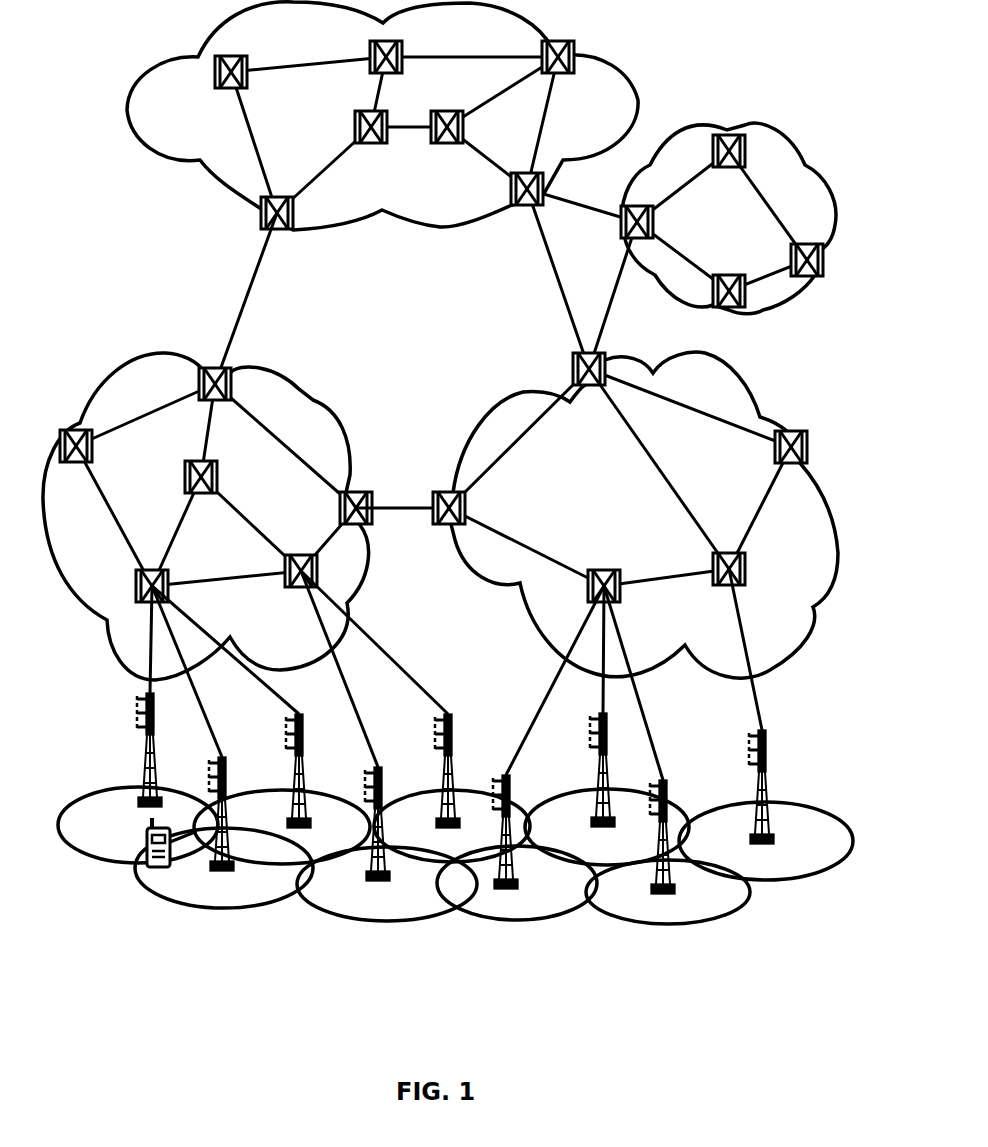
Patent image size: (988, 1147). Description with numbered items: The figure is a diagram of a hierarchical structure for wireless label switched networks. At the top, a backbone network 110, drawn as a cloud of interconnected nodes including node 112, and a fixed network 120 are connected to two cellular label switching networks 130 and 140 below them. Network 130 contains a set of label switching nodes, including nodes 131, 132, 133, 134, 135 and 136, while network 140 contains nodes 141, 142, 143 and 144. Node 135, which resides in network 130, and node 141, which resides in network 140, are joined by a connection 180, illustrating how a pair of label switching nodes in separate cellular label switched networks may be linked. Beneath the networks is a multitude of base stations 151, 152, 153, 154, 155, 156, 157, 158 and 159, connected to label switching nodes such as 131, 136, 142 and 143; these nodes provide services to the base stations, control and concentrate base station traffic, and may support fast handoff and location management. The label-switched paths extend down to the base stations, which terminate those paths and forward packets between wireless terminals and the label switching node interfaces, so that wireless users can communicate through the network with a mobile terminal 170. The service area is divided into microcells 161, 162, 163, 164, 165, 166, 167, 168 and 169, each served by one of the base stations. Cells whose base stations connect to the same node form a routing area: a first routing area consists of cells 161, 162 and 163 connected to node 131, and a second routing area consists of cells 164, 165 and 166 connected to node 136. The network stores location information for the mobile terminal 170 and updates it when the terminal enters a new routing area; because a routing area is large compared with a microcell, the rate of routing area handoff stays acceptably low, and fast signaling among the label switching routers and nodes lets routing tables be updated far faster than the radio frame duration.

The backbone network 110 is at (610, 60).
The core network node 112 is at (262, 218).
The fixed network 120 is at (775, 125).
The label switching network 130 is at (165, 352).
The label switching node 131 is at (137, 602).
The access network node 132 is at (230, 370).
The access network node 133 is at (82, 430).
The access network node 134 is at (217, 475).
The node 135 is at (358, 492).
The label switching node 136 is at (317, 583).
The label switching network 140 is at (735, 370).
The node 141 is at (452, 495).
The label switching node 142 is at (572, 636).
The label switching node 143 is at (745, 585).
The access network node 144 is at (575, 365).
The base station 151 is at (148, 738).
The base station 152 is at (218, 868).
The base station 153 is at (287, 745).
The base station 154 is at (370, 877).
The base station 155 is at (438, 743).
The base station 156 is at (500, 885).
The base station 157 is at (592, 748).
The base station 158 is at (663, 892).
The base station 159 is at (748, 762).
The microcell 161 is at (103, 860).
The microcell 162 is at (213, 910).
The microcell 163 is at (297, 867).
The microcell 164 is at (367, 920).
The microcell 165 is at (480, 790).
The microcell 166 is at (527, 920).
The microcell 167 is at (603, 867).
The microcell 168 is at (723, 910).
The microcell 169 is at (797, 877).
The mobile terminal 170 is at (147, 867).
The connection 180 is at (372, 522).